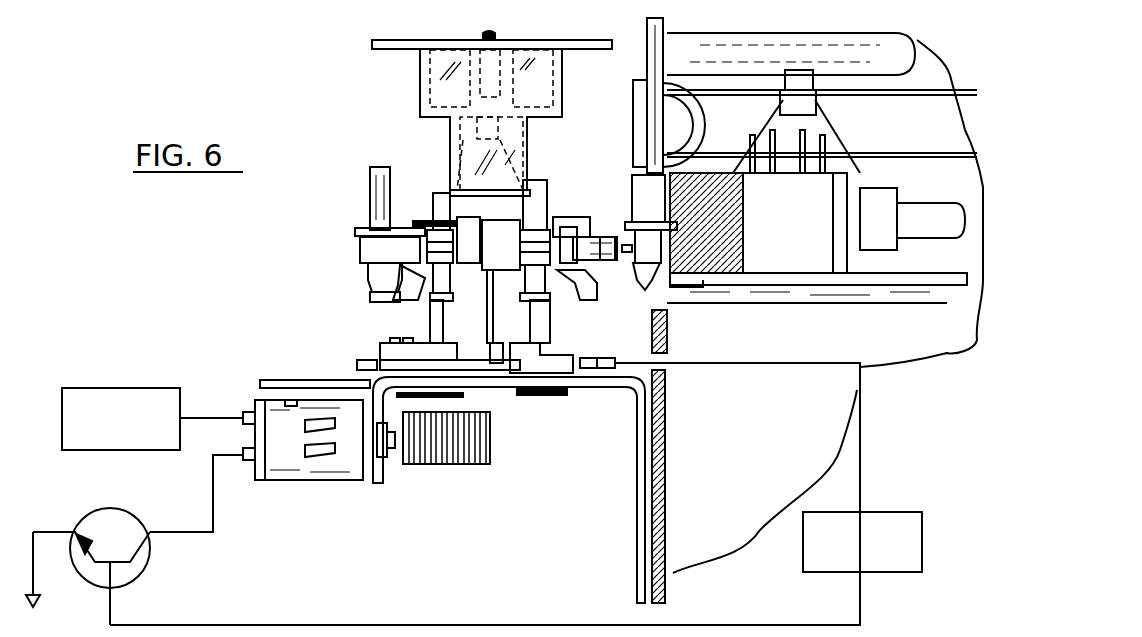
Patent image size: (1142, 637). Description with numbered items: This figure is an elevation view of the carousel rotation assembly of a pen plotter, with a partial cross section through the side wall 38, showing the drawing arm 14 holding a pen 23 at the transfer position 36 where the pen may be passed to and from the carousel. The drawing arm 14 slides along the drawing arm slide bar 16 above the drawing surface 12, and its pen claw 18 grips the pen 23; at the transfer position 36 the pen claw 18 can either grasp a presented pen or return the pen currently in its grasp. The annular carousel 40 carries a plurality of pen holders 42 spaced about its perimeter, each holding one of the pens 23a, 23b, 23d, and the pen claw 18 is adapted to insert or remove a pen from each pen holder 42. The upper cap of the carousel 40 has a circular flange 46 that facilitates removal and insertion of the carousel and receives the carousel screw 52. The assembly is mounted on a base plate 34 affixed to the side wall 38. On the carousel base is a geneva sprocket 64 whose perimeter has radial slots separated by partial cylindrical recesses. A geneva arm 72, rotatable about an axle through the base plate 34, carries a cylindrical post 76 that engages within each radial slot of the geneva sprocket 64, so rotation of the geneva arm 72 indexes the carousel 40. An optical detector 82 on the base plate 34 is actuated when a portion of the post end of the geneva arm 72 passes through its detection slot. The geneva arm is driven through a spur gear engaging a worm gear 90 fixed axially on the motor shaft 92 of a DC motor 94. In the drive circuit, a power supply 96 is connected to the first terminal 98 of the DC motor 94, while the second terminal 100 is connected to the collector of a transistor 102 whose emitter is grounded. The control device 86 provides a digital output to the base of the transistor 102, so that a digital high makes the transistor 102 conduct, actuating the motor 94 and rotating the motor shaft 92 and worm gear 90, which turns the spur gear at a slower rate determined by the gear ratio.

The drawing surface 12 is at (985, 290).
The drawing arm 14 is at (728, 277).
The drawing arm slide bar 16 is at (933, 222).
The pen claw 18 is at (672, 282).
The drawing pen 23 is at (552, 196).
The drawing pen 23a is at (368, 200).
The drawing pen 23b is at (423, 200).
The drawing pen 23d is at (640, 195).
The base plate 34 is at (618, 383).
The transfer position 36 is at (640, 180).
The side wall 38 is at (660, 528).
The annular carousel 40 is at (567, 218).
The pen holder 42 is at (427, 280).
The circular flange 46 is at (600, 50).
The carousel screw 52 is at (488, 36).
The geneva sprocket 64 is at (285, 376).
The geneva arm 72 is at (387, 347).
The cylindrical post 76 is at (497, 363).
The optical detector 82 is at (540, 363).
The control device 86 is at (895, 512).
The worm gear 90 is at (447, 463).
The motor shaft 92 is at (393, 447).
The DC motor 94 is at (320, 463).
The power supply 96 is at (120, 388).
The first terminal 98 is at (243, 420).
The second terminal 100 is at (243, 462).
The transistor 102 is at (97, 520).